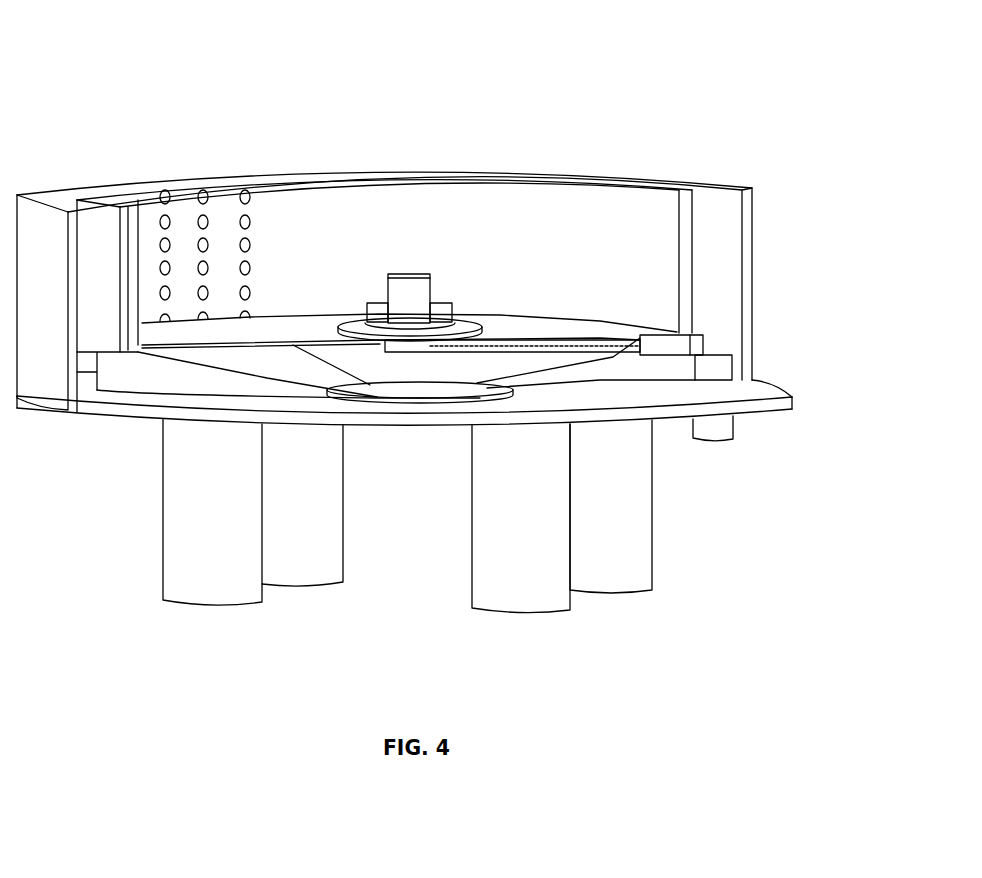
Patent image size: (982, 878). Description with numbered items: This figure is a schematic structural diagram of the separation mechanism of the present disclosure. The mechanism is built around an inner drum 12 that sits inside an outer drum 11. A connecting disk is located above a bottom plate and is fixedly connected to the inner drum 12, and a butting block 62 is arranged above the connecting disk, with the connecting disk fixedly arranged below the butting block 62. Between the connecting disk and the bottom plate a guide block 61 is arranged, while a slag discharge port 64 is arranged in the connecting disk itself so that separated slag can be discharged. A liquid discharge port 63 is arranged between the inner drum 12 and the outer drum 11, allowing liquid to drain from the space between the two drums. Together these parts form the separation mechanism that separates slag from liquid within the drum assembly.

The outer drum 11 is at (28, 228).
The inner drum 12 is at (103, 268).
The guide block 61 is at (265, 377).
The butting block 62 is at (460, 333).
The liquid discharge port 63 is at (727, 432).
The slag discharge port 64 is at (432, 390).